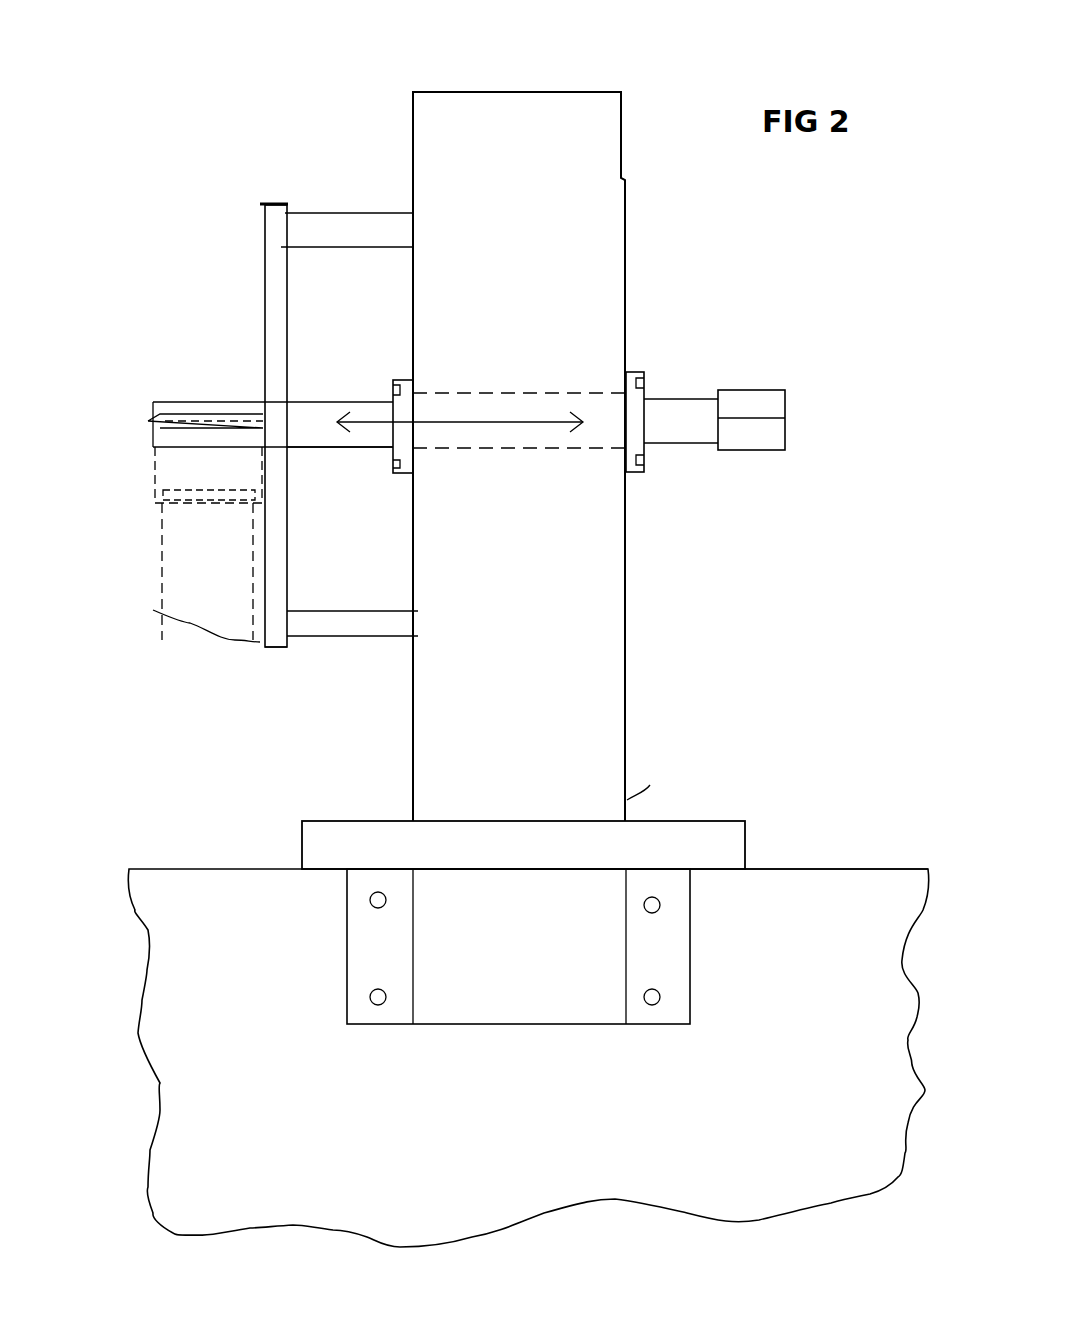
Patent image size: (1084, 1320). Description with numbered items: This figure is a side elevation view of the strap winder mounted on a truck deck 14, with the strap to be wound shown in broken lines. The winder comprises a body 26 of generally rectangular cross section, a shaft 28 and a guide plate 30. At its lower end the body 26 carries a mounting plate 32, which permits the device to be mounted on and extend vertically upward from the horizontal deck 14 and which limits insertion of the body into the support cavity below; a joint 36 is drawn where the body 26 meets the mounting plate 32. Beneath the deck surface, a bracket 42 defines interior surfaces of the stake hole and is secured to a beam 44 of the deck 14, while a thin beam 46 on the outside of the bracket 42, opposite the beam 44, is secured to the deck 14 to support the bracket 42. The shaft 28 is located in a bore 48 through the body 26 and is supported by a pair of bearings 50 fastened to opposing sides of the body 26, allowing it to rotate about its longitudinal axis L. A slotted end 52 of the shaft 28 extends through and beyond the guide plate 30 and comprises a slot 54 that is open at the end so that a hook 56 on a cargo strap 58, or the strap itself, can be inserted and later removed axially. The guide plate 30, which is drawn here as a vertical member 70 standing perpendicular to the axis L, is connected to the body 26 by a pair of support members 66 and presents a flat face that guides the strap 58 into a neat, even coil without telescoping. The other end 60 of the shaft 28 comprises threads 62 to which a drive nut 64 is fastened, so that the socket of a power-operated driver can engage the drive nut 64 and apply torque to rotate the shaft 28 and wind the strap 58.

The truck deck 14 is at (168, 882).
The body 26 is at (610, 78).
The shaft 28 is at (362, 456).
The guide plate 30 is at (266, 660).
The mounting plate 32 is at (686, 826).
The weld joint 36 is at (627, 800).
The bracket 42 is at (598, 955).
The beam 44 is at (830, 893).
The thin beam 46 is at (386, 898).
The bore 48 is at (465, 392).
The bearings 50 is at (397, 380).
The slotted end 52 is at (153, 404).
The slot 54 is at (148, 421).
The hook 56 is at (156, 468).
The cargo strap 58 is at (155, 550).
The other end 60 is at (710, 424).
The threads 62 is at (715, 442).
The drive nut 64 is at (760, 390).
The support members 66 is at (308, 212).
The vertical bar 70 is at (288, 210).
The longitudinal axis L is at (505, 428).